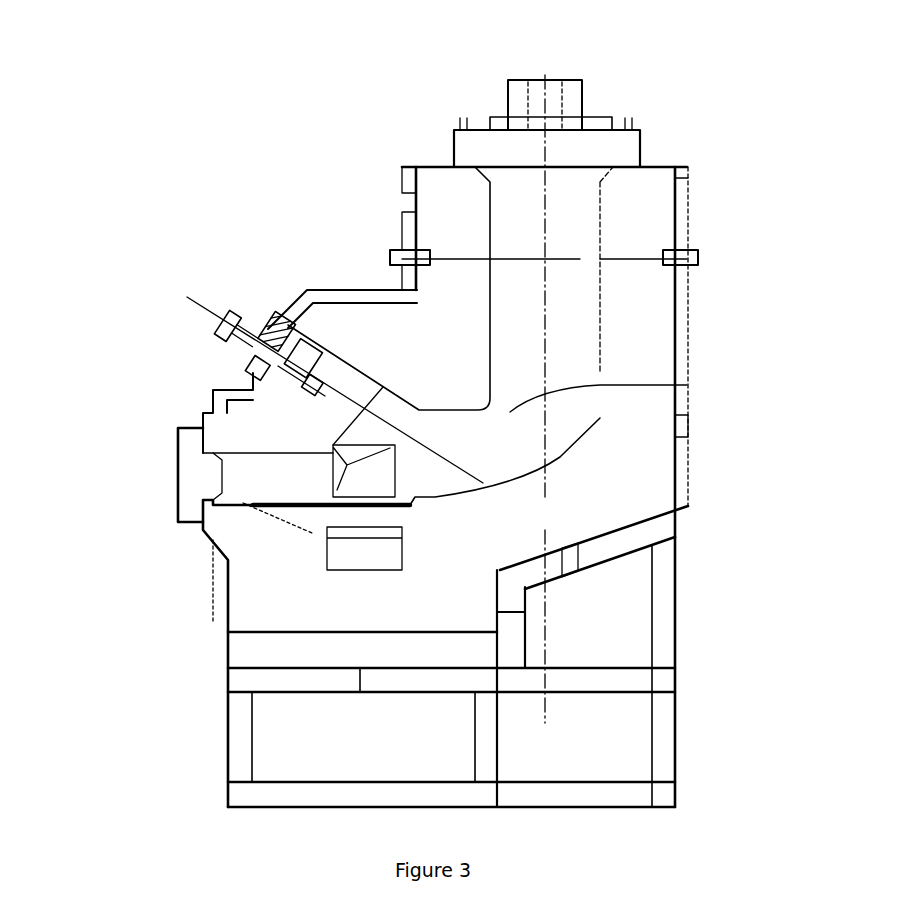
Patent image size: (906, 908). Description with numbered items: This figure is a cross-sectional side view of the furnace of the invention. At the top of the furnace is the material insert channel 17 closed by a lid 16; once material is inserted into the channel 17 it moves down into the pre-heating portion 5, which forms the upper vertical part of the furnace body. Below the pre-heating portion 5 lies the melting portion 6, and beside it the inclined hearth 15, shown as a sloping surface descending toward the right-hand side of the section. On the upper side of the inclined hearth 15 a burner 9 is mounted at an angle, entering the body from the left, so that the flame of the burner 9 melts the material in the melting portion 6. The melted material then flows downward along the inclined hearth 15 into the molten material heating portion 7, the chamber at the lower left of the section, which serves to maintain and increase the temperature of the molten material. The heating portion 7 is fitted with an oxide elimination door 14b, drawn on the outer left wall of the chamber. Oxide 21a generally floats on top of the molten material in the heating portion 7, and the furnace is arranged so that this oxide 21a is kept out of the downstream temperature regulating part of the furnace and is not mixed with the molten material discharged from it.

The pre-heating portion 5 is at (547, 297).
The melting portion 6 is at (690, 385).
The molten material heating portion 7 is at (267, 480).
The burner 9 is at (243, 340).
The oxide elimination door 14b is at (200, 475).
The inclined hearth 15 is at (483, 483).
The lid 16 is at (477, 158).
The material insert channel 17 is at (580, 180).
The oxide generation 21a is at (325, 508).